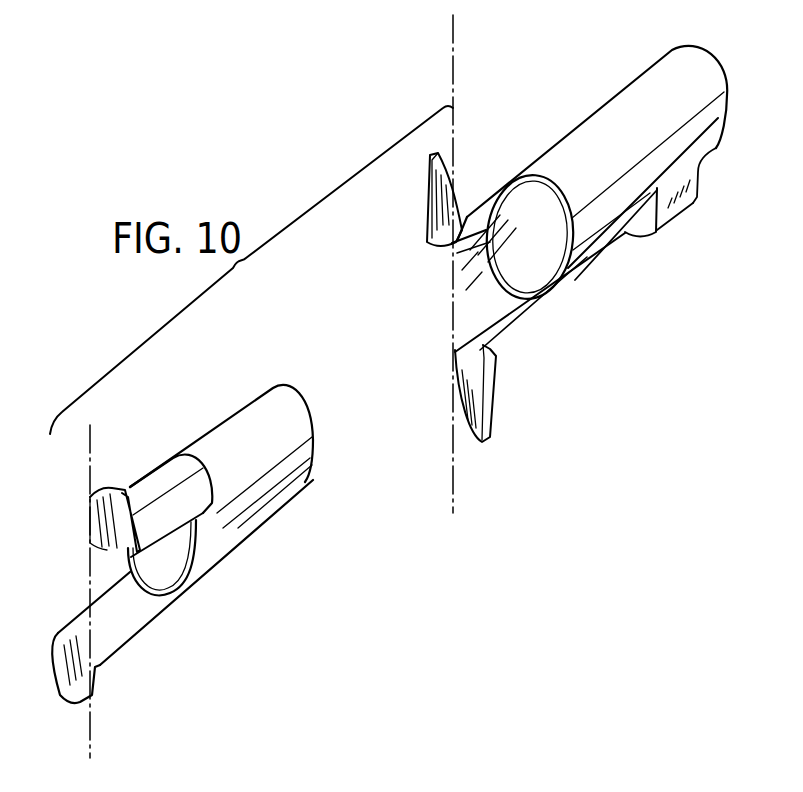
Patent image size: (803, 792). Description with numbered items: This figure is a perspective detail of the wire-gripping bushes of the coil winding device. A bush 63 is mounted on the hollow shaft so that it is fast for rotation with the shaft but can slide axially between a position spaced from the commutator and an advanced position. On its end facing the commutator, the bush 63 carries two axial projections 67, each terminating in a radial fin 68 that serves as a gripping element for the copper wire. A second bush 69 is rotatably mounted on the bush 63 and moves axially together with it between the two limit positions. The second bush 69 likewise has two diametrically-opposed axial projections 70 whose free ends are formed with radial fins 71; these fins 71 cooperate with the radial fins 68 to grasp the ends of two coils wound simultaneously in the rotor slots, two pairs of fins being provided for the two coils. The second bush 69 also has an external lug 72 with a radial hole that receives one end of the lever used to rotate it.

The bush 63 is at (277, 480).
The axial projection 67 is at (153, 477).
The radial fin 68 is at (103, 520).
The second bush 69 is at (592, 218).
The axial projection 70 is at (486, 212).
The radial fin 71 is at (425, 240).
The external lug 72 is at (670, 203).